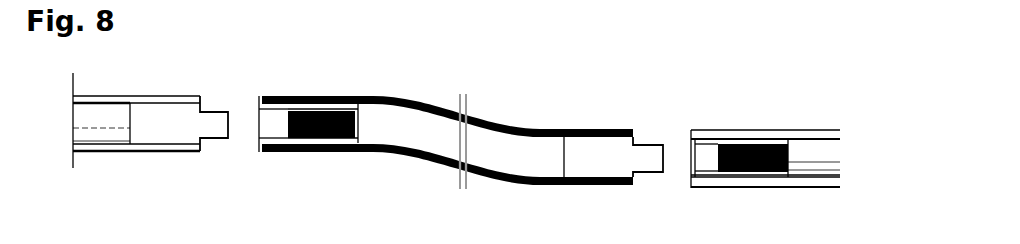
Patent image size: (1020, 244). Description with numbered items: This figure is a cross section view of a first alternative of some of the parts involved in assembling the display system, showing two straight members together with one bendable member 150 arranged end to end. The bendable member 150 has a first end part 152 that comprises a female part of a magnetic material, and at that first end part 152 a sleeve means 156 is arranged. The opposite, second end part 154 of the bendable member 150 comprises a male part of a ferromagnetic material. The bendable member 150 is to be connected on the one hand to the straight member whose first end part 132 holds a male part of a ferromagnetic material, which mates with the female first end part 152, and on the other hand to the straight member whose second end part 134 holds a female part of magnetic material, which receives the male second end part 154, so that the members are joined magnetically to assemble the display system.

The first end part 132 is at (167, 97).
The second end part 134 is at (733, 183).
The bendable member 150 is at (413, 157).
The first end part 152 is at (297, 95).
The second end part 154 is at (603, 130).
The sleeve means 156 is at (258, 143).